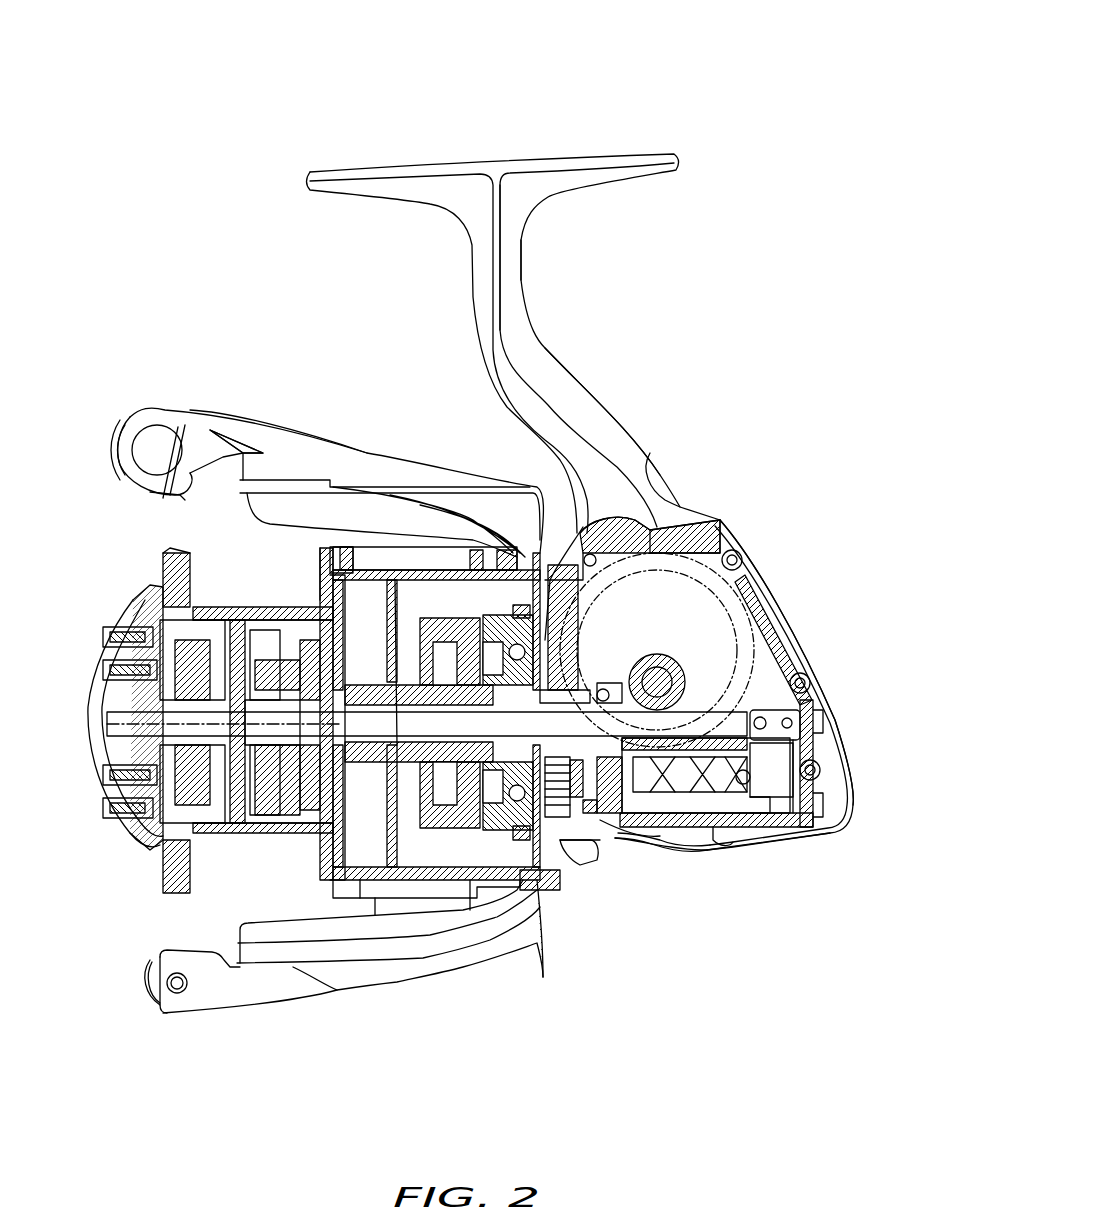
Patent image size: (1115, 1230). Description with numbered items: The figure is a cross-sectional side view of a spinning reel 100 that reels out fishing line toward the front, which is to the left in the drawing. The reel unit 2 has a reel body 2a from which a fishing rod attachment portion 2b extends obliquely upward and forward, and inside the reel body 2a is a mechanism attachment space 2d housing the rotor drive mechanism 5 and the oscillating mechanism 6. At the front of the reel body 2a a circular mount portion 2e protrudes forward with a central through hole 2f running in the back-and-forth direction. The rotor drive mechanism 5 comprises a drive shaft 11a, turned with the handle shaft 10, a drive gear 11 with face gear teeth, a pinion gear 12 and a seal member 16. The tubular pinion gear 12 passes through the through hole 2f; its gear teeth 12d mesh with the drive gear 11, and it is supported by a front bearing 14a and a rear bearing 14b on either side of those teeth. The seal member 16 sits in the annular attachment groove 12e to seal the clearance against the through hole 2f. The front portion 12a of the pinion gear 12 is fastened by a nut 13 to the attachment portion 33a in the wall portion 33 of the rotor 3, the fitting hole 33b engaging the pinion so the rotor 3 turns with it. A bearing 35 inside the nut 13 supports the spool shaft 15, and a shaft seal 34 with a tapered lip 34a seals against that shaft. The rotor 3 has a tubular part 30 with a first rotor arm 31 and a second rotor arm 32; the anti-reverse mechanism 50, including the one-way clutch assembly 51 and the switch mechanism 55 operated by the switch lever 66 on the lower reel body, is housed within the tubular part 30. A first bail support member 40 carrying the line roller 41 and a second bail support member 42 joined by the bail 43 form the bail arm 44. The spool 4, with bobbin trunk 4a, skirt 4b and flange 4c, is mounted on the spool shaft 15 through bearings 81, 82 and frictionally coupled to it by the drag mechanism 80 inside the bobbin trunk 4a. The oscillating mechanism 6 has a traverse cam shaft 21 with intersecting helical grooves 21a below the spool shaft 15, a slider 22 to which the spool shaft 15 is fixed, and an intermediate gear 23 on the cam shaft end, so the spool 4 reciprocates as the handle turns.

The spinning reel 100 is at (664, 112).
The reel unit 2 is at (645, 417).
The reel body 2a is at (672, 535).
The fishing rod attachment portion 2b is at (532, 320).
The mechanism attachment space 2d is at (742, 545).
The mount portion 2e is at (580, 530).
The through hole 2f is at (543, 960).
The rotor 3 is at (420, 440).
The spool 4 is at (210, 600).
The bobbin trunk 4a is at (235, 640).
The skirt 4b is at (310, 490).
The flange 4c is at (165, 553).
The rotor drive mechanism 5 is at (712, 750).
The oscillating mechanism 6 is at (722, 835).
The handle shaft 10 is at (672, 680).
The drive gear 11 is at (760, 568).
The drive shaft 11a is at (655, 655).
The pinion gear 12 is at (577, 695).
The front portion 12a is at (398, 897).
The gear teeth 12d is at (655, 525).
The attachment groove 12e is at (610, 815).
The nut 13 is at (345, 540).
The front bearing 14a is at (570, 880).
The rear bearing 14b is at (665, 810).
The spool shaft 15 is at (118, 665).
The seal member 16 is at (580, 870).
The traverse cam shaft 21 is at (770, 705).
The intersecting helical grooves 21a is at (803, 727).
The slider 22 is at (772, 805).
The intermediate gear 23 is at (603, 872).
The tubular part 30 is at (437, 560).
The first rotor arm 31 is at (360, 560).
The second rotor arm 32 is at (410, 950).
The wall portion 33 is at (357, 913).
The attachment portion 33a is at (440, 913).
The fitting hole 33b is at (488, 900).
The shaft seal 34 is at (335, 585).
The lip 34a is at (335, 630).
The bearing 35 is at (340, 790).
The first bail support member 40 is at (222, 415).
The line roller 41 is at (150, 412).
The second bail support member 42 is at (250, 1003).
The bail 43 is at (140, 470).
The bail arm 44 is at (267, 410).
The anti-reverse mechanism 50 is at (470, 565).
The one-way clutch assembly 51 is at (527, 600).
The switch mechanism 55 is at (640, 895).
The switch lever 66 is at (610, 895).
The drag mechanism 80 is at (228, 790).
The bearing 81 is at (165, 838).
The bearing 82 is at (283, 790).